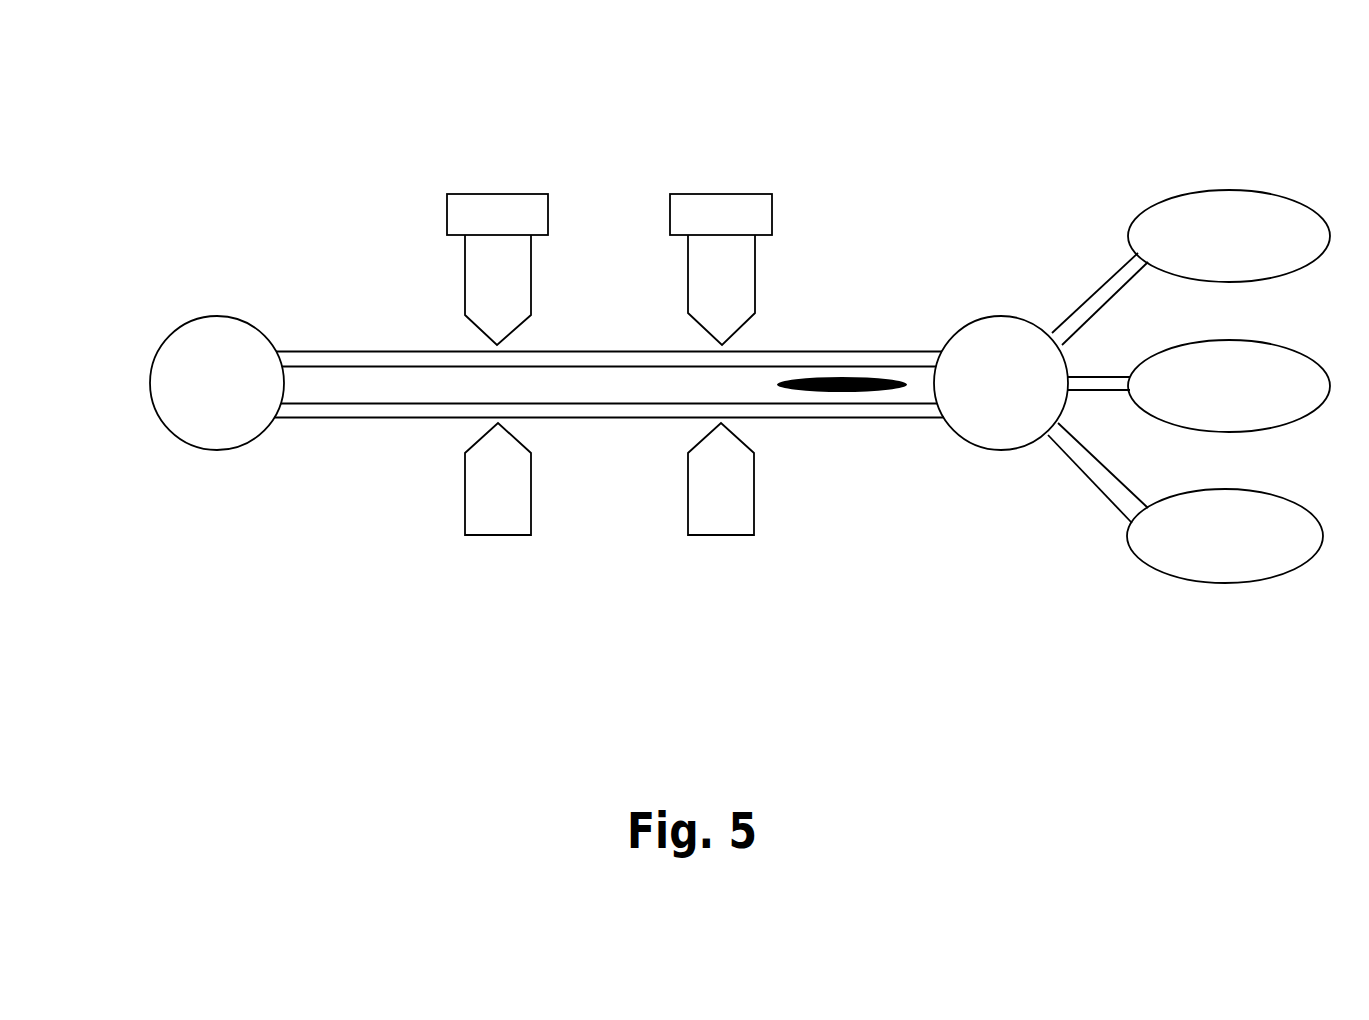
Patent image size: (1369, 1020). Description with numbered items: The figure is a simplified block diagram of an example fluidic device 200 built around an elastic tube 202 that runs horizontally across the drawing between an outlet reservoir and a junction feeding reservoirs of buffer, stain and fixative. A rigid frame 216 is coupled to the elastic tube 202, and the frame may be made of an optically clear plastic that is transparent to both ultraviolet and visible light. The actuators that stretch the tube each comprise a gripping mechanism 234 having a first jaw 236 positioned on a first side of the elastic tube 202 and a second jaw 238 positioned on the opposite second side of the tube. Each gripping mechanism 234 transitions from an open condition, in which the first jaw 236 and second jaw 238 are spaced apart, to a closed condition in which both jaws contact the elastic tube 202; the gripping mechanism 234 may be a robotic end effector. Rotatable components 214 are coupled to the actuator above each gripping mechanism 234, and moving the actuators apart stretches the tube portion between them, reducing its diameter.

The fluidic device 200 is at (214, 187).
The elastic tube 202 is at (637, 367).
The rotatable components 214 is at (477, 194).
The rigid frame 216 is at (355, 350).
The gripping mechanism 234 is at (423, 177).
The first jaw 236 is at (466, 256).
The second jaw 238 is at (465, 515).